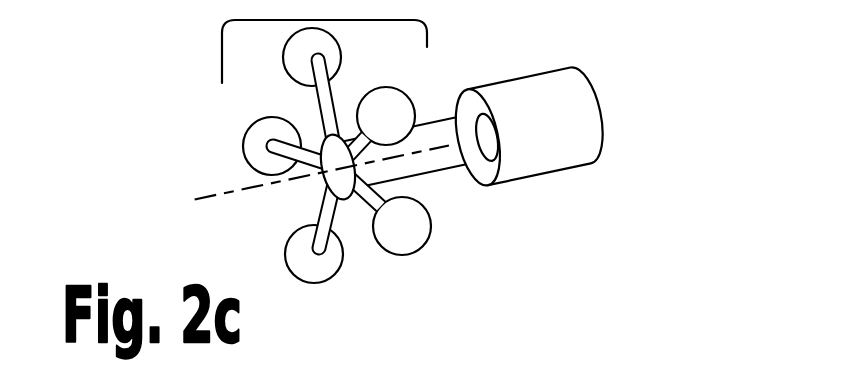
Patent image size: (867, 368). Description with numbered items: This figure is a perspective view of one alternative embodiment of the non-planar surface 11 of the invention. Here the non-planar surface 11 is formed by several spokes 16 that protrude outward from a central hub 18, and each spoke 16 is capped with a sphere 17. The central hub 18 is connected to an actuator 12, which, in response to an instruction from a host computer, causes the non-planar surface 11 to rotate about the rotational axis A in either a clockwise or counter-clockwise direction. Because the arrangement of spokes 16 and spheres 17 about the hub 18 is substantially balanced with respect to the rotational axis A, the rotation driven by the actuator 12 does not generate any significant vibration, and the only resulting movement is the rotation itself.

The non-planar surface 11 is at (218, 60).
The actuator 12 is at (580, 100).
The spokes 16 is at (322, 91).
The spheres 17 is at (322, 270).
The central hub 18 is at (333, 120).
The rotational axis A is at (304, 188).